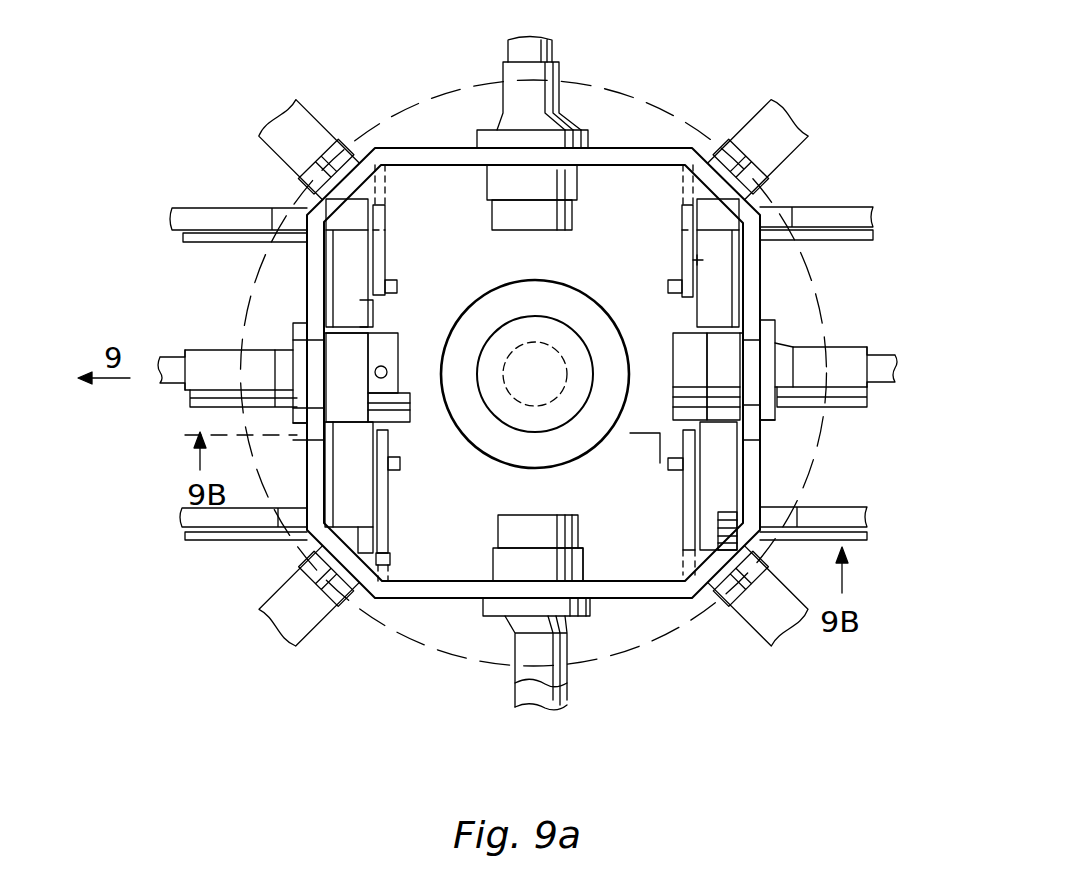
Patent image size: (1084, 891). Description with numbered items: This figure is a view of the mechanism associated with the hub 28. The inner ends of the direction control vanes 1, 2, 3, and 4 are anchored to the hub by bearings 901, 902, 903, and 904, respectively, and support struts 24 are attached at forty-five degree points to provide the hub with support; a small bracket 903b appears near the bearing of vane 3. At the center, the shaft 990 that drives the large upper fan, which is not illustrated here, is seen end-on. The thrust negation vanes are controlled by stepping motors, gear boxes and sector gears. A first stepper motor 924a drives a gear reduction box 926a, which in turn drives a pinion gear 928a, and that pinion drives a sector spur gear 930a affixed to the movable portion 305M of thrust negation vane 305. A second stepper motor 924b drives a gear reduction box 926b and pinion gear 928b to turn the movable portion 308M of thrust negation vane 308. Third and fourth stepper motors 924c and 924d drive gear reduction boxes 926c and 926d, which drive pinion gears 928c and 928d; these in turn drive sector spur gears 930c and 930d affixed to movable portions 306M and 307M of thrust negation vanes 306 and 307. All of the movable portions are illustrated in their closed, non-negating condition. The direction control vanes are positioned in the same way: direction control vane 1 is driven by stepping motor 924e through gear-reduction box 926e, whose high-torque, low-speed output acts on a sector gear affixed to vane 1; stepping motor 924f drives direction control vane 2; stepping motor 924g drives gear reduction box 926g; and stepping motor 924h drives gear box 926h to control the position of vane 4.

The direction control vane 1 is at (188, 338).
The direction control vane 2 is at (503, 70).
The direction control vane 3 is at (830, 408).
The direction control vane 4 is at (515, 688).
The support strut 24 is at (273, 113).
The hub 28 is at (927, 650).
The thrust negation vane 305 is at (200, 244).
The movable portion of thrust negation vane 305M is at (224, 207).
The thrust negation vane 306 is at (800, 247).
The movable portion of thrust negation vane 306M is at (838, 207).
The thrust negation vane 307 is at (864, 525).
The movable portion of thrust negation vane 307M is at (860, 543).
The thrust negation vane 308 is at (183, 530).
The movable portion of thrust negation vane 308M is at (262, 548).
The bearing 901 is at (293, 330).
The bearing 902 is at (588, 138).
The bearing 903 is at (775, 430).
The bracket 903b is at (385, 560).
The bearing 904 is at (588, 620).
The first stepper motor 924a is at (326, 283).
The second stepper motor 924b is at (297, 440).
The third stepper motor 924c is at (775, 310).
The fourth stepper motor 924d is at (775, 490).
The stepping motor 924e is at (393, 418).
The stepping motor 924f is at (492, 228).
The stepping motor 924g is at (673, 338).
The stepping motor 924h is at (505, 515).
The gear reduction box 926a is at (368, 319).
The gear reduction box 926b is at (367, 507).
The gear reduction box 926c is at (693, 260).
The gear reduction box 926d is at (697, 503).
The gear-reduction box 926e is at (337, 380).
The gear reduction box 926g is at (735, 375).
The gear box 926h is at (588, 560).
The pinion gear 928a is at (400, 286).
The pinion gear 928b is at (400, 467).
The pinion gear 928c is at (668, 287).
The pinion gear 928d is at (668, 466).
The sector spur gear 930a is at (388, 210).
The sector spur gear 930c is at (682, 233).
The sector spur gear 930d is at (683, 533).
The shaft 990 is at (540, 340).